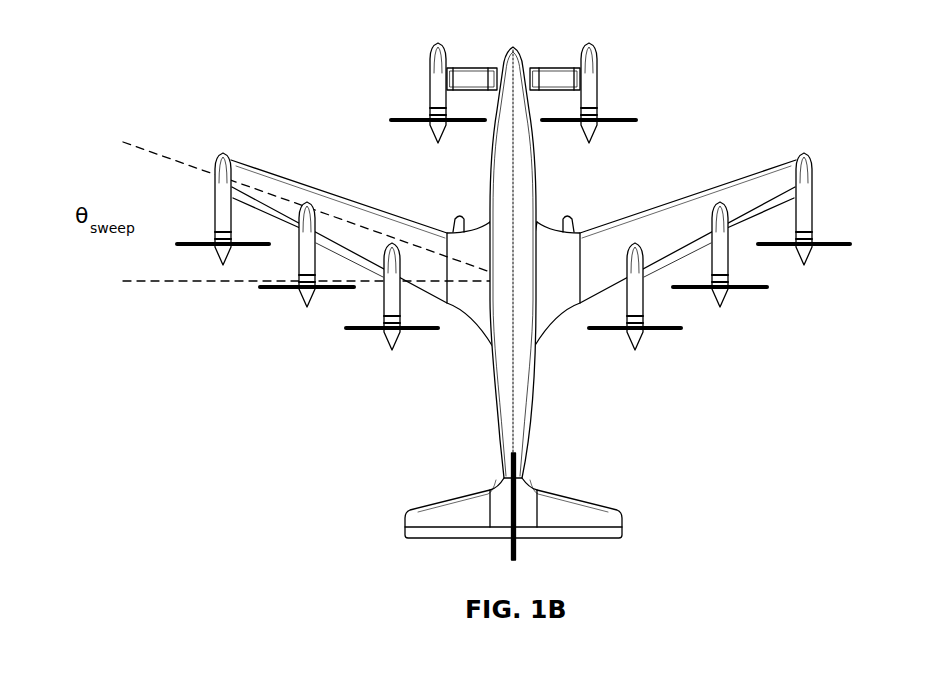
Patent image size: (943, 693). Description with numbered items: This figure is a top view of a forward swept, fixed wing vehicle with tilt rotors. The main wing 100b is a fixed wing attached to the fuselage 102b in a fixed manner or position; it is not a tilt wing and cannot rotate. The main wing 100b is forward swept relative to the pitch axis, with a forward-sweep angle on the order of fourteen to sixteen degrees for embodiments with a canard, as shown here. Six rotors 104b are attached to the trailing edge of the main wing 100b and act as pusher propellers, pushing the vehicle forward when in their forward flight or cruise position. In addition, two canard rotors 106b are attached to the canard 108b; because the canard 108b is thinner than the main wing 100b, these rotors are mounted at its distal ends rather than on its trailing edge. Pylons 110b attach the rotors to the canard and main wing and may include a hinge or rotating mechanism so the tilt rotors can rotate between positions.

The main wing 100b is at (708, 188).
The fuselage 102b is at (537, 163).
The rotor 104b is at (720, 307).
The canard rotor 106b is at (390, 120).
The canard 108b is at (476, 64).
The pylon 110b is at (600, 88).